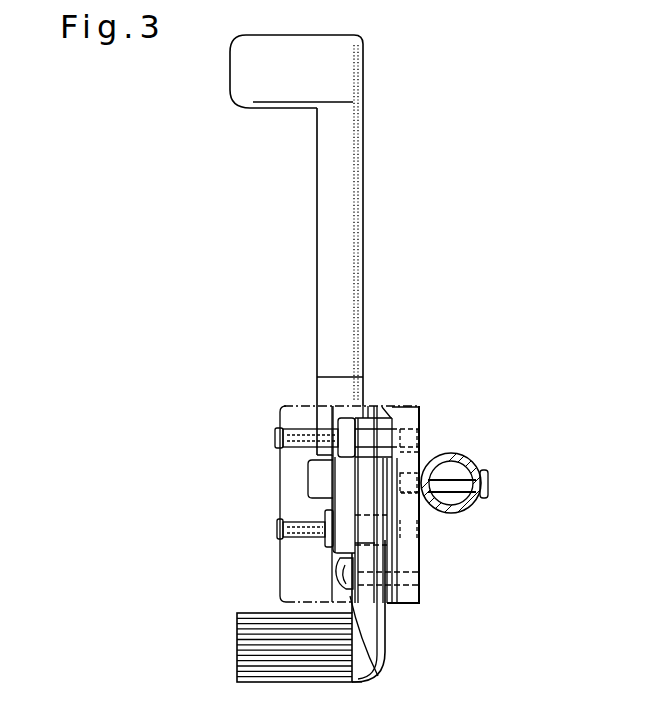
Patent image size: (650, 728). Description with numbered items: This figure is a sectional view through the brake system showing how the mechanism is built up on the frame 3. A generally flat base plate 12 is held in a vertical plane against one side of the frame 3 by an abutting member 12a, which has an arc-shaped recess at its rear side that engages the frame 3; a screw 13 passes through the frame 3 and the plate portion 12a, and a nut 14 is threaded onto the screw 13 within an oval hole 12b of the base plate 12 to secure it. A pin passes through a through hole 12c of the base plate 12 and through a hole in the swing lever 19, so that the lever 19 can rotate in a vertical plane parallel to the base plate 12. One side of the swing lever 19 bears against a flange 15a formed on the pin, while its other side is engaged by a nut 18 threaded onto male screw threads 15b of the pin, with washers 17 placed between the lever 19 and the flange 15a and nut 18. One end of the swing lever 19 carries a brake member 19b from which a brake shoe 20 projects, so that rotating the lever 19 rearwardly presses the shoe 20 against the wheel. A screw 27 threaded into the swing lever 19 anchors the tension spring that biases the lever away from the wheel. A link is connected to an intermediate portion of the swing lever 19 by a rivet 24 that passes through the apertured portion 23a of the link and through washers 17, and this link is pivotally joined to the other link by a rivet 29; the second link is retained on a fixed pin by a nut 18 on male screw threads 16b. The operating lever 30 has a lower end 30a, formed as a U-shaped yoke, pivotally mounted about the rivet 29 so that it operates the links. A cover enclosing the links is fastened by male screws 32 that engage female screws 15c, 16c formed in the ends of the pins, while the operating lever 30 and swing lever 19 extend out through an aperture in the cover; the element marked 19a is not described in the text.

The frame 3 is at (462, 460).
The base plate 12 is at (423, 455).
The abutting member 12a is at (425, 462).
The oval hole 12b is at (420, 545).
The through hole 12c is at (420, 445).
The screw 13 is at (490, 478).
The nut 14 is at (428, 513).
The flange 15a is at (408, 413).
The male screw threads 15b is at (300, 430).
The female screw 15c is at (300, 418).
The male screw threads 16b is at (333, 540).
The female screw 16c is at (300, 548).
The washers 17 is at (345, 428).
The nut 18 is at (335, 425).
The swing lever 19 is at (374, 620).
The pedal arm upper portion 19a is at (366, 420).
The brake member 19b is at (320, 683).
The brake shoe 20 is at (285, 683).
The apertured portion 23a is at (356, 578).
The rivet 24 is at (326, 520).
The screw 27 is at (383, 665).
The rivet 29 is at (315, 478).
The operating lever 30 is at (347, 124).
The lower end 30a is at (325, 455).
The male screws 32 is at (280, 436).